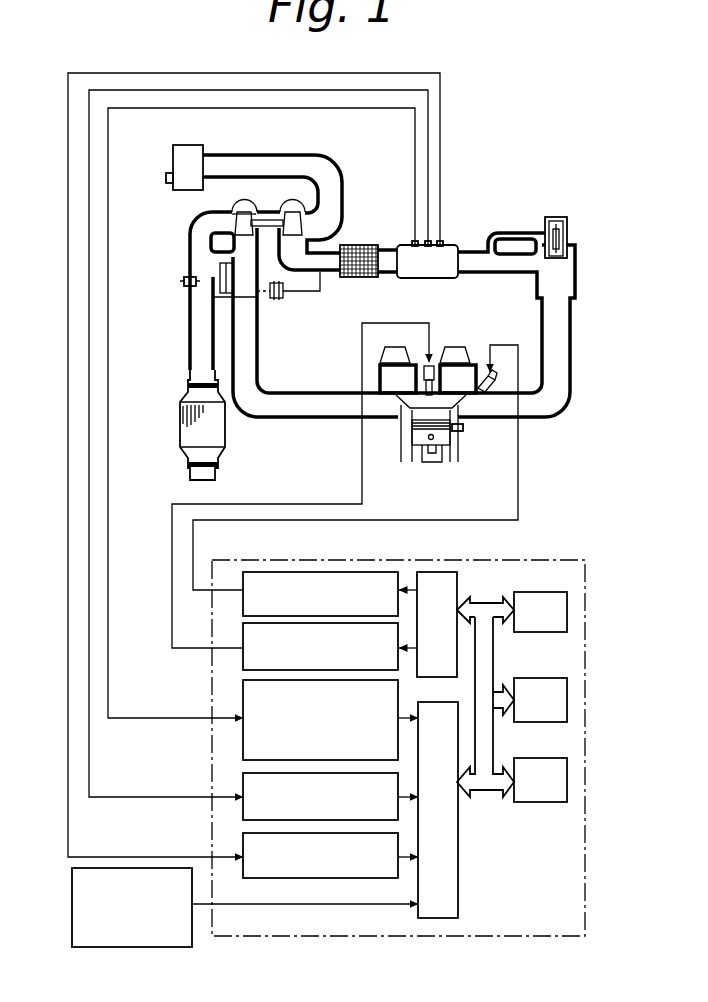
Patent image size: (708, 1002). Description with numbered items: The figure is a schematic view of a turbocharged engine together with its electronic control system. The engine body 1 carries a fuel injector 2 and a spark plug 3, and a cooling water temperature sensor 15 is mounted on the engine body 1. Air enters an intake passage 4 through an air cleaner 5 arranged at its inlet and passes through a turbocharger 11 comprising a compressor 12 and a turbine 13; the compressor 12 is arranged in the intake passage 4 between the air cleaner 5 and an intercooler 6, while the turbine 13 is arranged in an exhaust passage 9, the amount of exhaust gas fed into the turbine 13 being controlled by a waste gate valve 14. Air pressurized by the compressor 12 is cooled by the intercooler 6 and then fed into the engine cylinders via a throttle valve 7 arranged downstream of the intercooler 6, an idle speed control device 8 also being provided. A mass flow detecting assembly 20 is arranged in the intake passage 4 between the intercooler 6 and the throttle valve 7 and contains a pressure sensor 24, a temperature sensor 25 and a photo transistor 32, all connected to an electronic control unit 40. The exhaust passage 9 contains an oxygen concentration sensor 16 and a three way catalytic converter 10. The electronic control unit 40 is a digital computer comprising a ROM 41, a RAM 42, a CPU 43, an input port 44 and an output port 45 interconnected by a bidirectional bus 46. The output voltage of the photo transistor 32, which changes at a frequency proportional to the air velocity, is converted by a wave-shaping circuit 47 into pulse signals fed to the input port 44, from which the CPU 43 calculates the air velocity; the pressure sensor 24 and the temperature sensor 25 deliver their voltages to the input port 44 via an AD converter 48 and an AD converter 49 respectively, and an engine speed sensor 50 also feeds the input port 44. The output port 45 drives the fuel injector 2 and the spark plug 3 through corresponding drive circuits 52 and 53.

The engine body 1 is at (467, 451).
The fuel injector 2 is at (491, 374).
The spark plug 3 is at (434, 362).
The intake passage 4 is at (318, 161).
The air cleaner 5 is at (191, 150).
The intercooler 6 is at (366, 245).
The throttle valve 7 is at (513, 260).
The idle speed control device 8 is at (553, 216).
The exhaust passage 9 is at (190, 336).
The three way catalytic converter 10 is at (183, 434).
The turbocharger 11 is at (231, 201).
The compressor 12 is at (290, 206).
The turbine 13 is at (234, 222).
The waste gate valve 14 is at (212, 260).
The cooling water temperature sensor 15 is at (465, 428).
The oxygen concentration sensor 16 is at (185, 282).
The mass flow detecting assembly 20 is at (424, 266).
The pressure sensor 24 is at (431, 243).
The temperature sensor 25 is at (446, 243).
The photo transistor 32 is at (414, 243).
The electronic control unit 40 is at (591, 578).
The ROM 41 is at (540, 592).
The RAM 42 is at (535, 678).
The CPU 43 is at (538, 758).
The input port 44 is at (462, 866).
The output port 45 is at (458, 573).
The bidirectional bus 46 is at (488, 794).
The wave-shaping circuit 47 is at (243, 697).
The AD converter 48 is at (243, 778).
The AD converter 49 is at (243, 840).
The engine speed sensor 50 is at (72, 910).
The drive circuit 52 is at (243, 580).
The drive circuit 53 is at (243, 627).